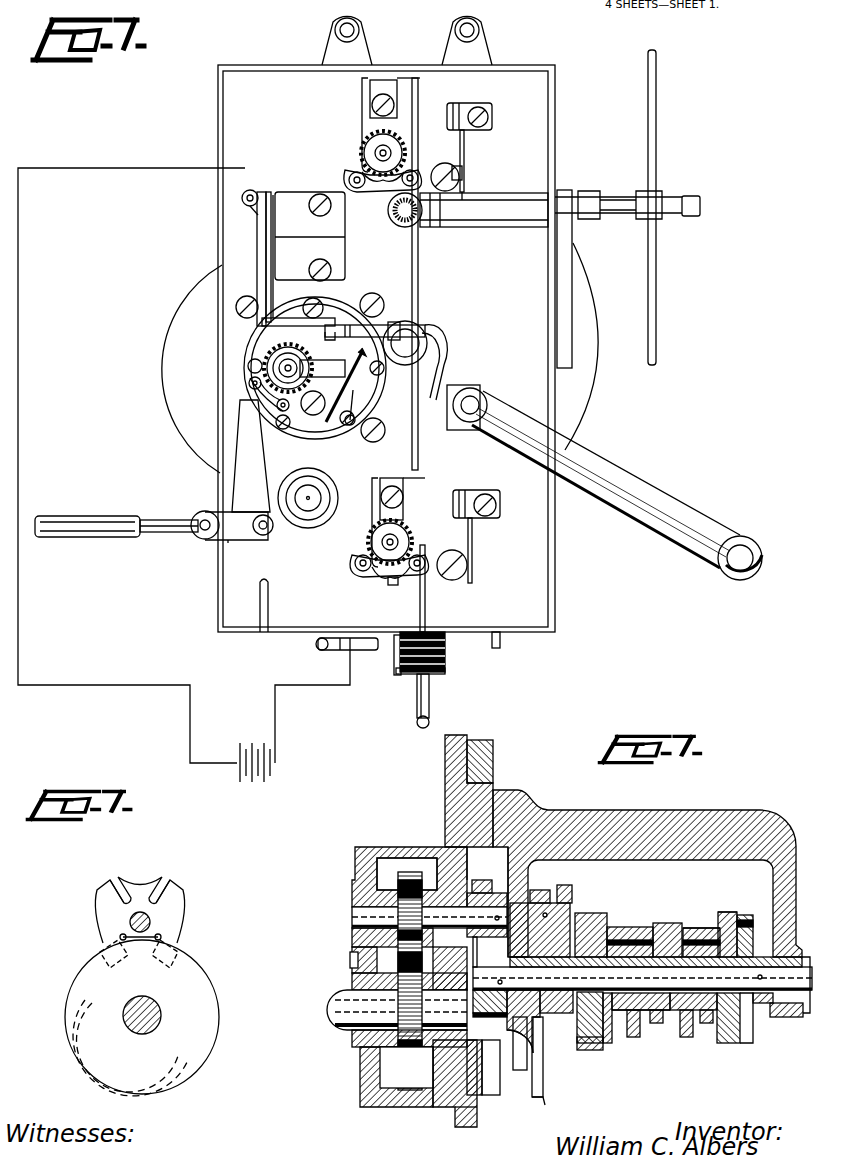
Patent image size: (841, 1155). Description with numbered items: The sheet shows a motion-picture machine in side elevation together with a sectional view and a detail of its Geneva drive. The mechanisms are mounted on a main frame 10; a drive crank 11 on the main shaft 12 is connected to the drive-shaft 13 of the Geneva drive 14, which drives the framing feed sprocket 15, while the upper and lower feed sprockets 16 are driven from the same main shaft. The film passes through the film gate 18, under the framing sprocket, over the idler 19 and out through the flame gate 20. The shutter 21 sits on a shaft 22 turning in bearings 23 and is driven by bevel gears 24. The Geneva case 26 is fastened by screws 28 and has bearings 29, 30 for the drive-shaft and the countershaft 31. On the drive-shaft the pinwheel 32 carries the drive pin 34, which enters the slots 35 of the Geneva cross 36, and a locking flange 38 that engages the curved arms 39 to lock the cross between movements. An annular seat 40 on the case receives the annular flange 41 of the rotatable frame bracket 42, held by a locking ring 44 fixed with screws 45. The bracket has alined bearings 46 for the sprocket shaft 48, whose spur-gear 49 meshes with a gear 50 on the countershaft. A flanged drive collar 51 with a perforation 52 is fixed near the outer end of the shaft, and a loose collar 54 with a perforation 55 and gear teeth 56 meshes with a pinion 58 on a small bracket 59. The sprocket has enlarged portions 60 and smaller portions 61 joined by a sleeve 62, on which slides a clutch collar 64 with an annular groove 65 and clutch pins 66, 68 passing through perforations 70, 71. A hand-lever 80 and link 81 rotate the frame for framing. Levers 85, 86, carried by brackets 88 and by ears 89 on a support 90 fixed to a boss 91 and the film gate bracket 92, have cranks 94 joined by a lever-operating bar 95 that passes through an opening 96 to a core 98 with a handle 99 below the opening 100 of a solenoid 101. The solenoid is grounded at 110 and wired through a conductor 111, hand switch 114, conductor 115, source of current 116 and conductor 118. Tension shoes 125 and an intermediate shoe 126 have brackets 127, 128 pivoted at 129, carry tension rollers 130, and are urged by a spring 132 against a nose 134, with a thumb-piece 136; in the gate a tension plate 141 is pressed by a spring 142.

In FIG. 1, the main frame 10 is at (245, 202).
In FIG. 1, the drive crank 11 is at (648, 482).
In FIG. 1, the main shaft 12 is at (480, 393).
In FIG. 3, the drive-shaft 13 is at (335, 998).
In FIG. 4, the drive-shaft 13 is at (125, 1018).
In FIG. 1, the Geneva drive 14 is at (385, 378).
In FIG. 3, the Geneva drive 14 is at (332, 891).
In FIG. 1, the framing feed sprocket 15 is at (262, 362).
In FIG. 3, the framing feed sprocket 15 is at (750, 1043).
In FIG. 1, the feed sprockets 16 is at (360, 154).
In FIG. 1, the film gate 18 is at (252, 224).
In FIG. 1, the idler 19 is at (322, 493).
In FIG. 1, the flame gate 20 is at (276, 605).
In FIG. 1, the shutter 21 is at (657, 127).
In FIG. 1, the shaft 22 is at (689, 218).
In FIG. 1, the bearings 23 is at (567, 192).
In FIG. 1, the bevel gears 24 is at (388, 210).
In FIG. 1, the Geneva case 26 is at (388, 403).
In FIG. 3, the Geneva case 26 is at (444, 778).
In FIG. 1, the screws 28 is at (236, 307).
In FIG. 3, the bearing 29 is at (360, 1040).
In FIG. 3, the bearing 30 is at (452, 892).
In FIG. 3, the countershaft 31 is at (352, 926).
In FIG. 4, the countershaft 31 is at (152, 921).
In FIG. 3, the pinwheel 32 is at (372, 1108).
In FIG. 4, the pinwheel 32 is at (220, 1040).
In FIG. 4, the drive pin 34 is at (106, 966).
In FIG. 4, the slots 35 is at (108, 888).
In FIG. 4, the Geneva cross 36 is at (134, 883).
In FIG. 4, the locking flange 38 is at (182, 1057).
In FIG. 4, the curved arms 39 is at (180, 903).
In FIG. 3, the annular seat 40 is at (447, 1080).
In FIG. 3, the annular flange 41 is at (477, 1100).
In FIG. 1, the rotatable frame bracket 42 is at (330, 362).
In FIG. 3, the rotatable frame bracket 42 is at (712, 810).
In FIG. 3, the locking ring 44 is at (495, 758).
In FIG. 1, the screws 45 is at (351, 428).
In FIG. 3, the alined bearings 46 is at (545, 1040).
In FIG. 3, the sprocket shaft 48 is at (803, 966).
In FIG. 3, the spur-gear 49 is at (477, 1000).
In FIG. 3, the gear 50 is at (482, 880).
In FIG. 3, the flanged drive collar 51 is at (775, 1017).
In FIG. 3, the perforation 52 is at (755, 915).
In FIG. 3, the collar 54 is at (586, 1051).
In FIG. 3, the perforation 55 is at (600, 913).
In FIG. 3, the gear teeth 56 is at (576, 1016).
In FIG. 3, the pinion 58 is at (570, 893).
In FIG. 1, the small bracket 59 is at (338, 324).
In FIG. 3, the small bracket 59 is at (540, 890).
In FIG. 3, the enlarged portion 60 is at (590, 913).
In FIG. 3, the smaller portion 61 is at (650, 923).
In FIG. 3, the sleeve 62 is at (641, 1027).
In FIG. 3, the clutch collar 64 is at (672, 923).
In FIG. 3, the annular groove 65 is at (673, 923).
In FIG. 3, the clutch pin 66 is at (712, 928).
In FIG. 3, the clutch pin 68 is at (630, 925).
In FIG. 3, the perforation 70 is at (733, 912).
In FIG. 3, the perforation 71 is at (620, 927).
In FIG. 1, the hand-lever 80 is at (128, 540).
In FIG. 1, the link 81 is at (258, 476).
In FIG. 3, the link 81 is at (545, 1098).
In FIG. 1, the lever 85 is at (368, 110).
In FIG. 1, the lever 86 is at (386, 325).
In FIG. 1, the brackets 88 is at (400, 108).
In FIG. 1, the ears 89 is at (418, 325).
In FIG. 1, the support 90 is at (442, 348).
In FIG. 1, the boss 91 is at (450, 385).
In FIG. 1, the film gate bracket 92 is at (282, 277).
In FIG. 1, the cranks 94 is at (421, 79).
In FIG. 1, the lever-operating bar 95 is at (419, 290).
In FIG. 1, the opening 96 is at (428, 626).
In FIG. 1, the core 98 is at (430, 690).
In FIG. 1, the handle 99 is at (417, 724).
In FIG. 1, the opening 100 is at (396, 672).
In FIG. 1, the solenoid 101 is at (447, 660).
In FIG. 1, the ground 110 is at (502, 642).
In FIG. 1, the conductor 111 is at (392, 655).
In FIG. 1, the hand switch 114 is at (345, 650).
In FIG. 1, the conductor 115 is at (322, 687).
In FIG. 1, the source of current 116 is at (264, 784).
In FIG. 1, the conductor 118 is at (114, 688).
In FIG. 1, the tension shoes 125 is at (362, 598).
In FIG. 1, the intermediate shoe 126 is at (248, 368).
In FIG. 1, the brackets 127 is at (436, 172).
In FIG. 1, the bracket 128 is at (313, 416).
In FIG. 1, the pivot 129 is at (462, 172).
In FIG. 1, the tension rollers 130 is at (248, 383).
In FIG. 1, the spring 132 is at (464, 149).
In FIG. 1, the nose 134 is at (464, 193).
In FIG. 1, the thumb-piece 136 is at (394, 586).
In FIG. 1, the tension plate 141 is at (262, 275).
In FIG. 1, the spring 142 is at (274, 248).